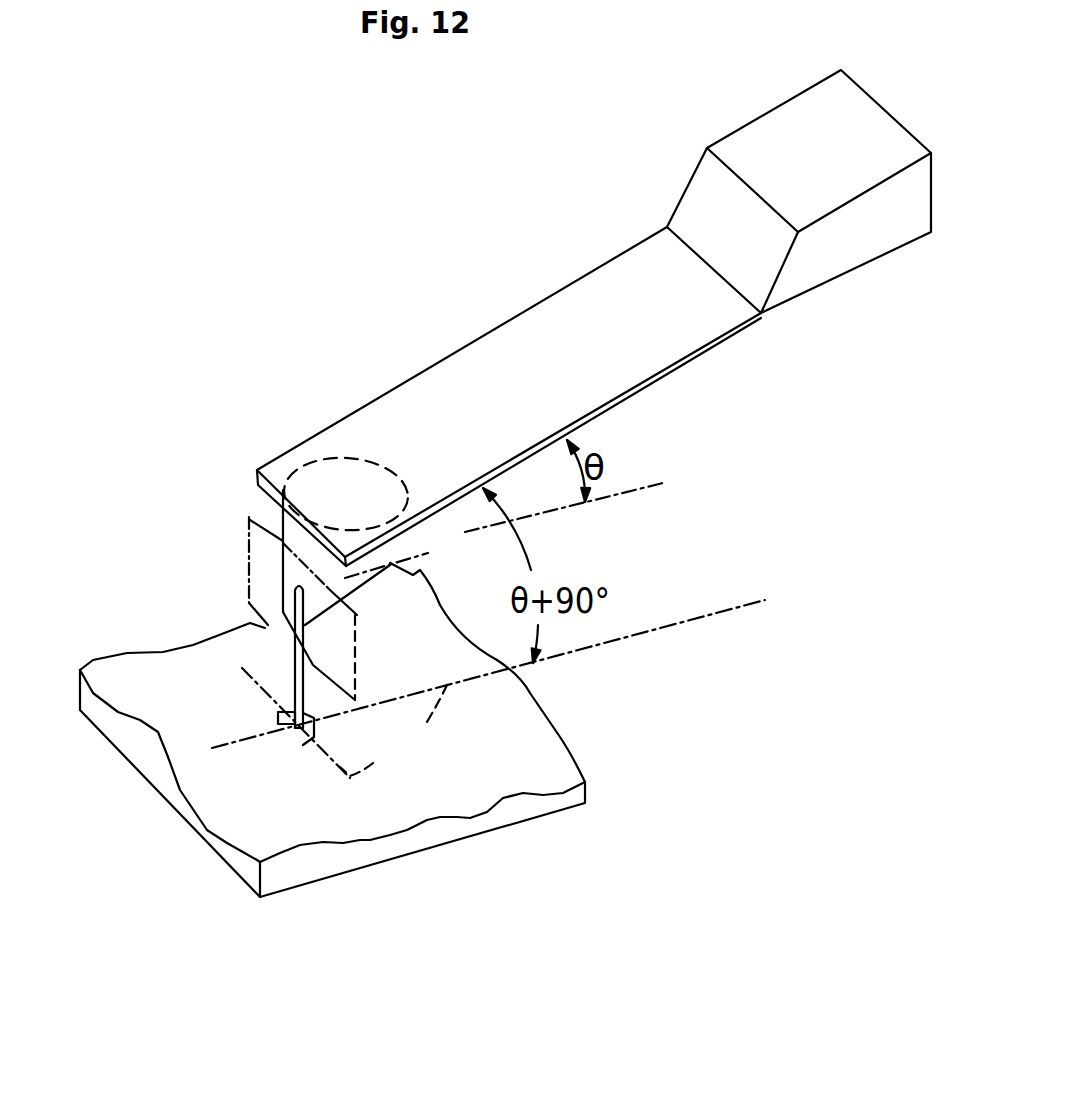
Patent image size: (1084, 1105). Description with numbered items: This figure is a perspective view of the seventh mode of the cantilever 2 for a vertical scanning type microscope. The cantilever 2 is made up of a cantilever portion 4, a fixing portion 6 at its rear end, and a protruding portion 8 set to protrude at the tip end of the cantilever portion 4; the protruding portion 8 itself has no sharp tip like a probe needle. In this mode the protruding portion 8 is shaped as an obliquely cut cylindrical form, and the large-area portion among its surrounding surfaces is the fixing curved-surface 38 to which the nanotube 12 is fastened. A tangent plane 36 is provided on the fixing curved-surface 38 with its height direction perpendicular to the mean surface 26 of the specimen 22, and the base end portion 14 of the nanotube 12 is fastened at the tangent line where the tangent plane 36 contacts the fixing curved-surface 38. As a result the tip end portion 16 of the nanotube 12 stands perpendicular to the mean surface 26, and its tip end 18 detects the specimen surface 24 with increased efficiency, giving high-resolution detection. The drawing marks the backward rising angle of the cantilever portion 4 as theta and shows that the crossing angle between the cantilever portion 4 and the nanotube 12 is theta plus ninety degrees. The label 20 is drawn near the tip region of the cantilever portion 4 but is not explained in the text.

The cantilever 2 is at (456, 346).
The cantilever portion 4 is at (640, 368).
The fixing portion 6 is at (818, 202).
The protruding portion 8 is at (488, 615).
The nanotube 12 is at (262, 633).
The base end portion 14 is at (287, 607).
The tip end portion 16 is at (293, 696).
The tip end 18 is at (297, 729).
The arm tip opening 20 is at (552, 253).
The specimen 22 is at (468, 825).
The specimen surface 24 is at (357, 823).
The mean surface 26 is at (393, 730).
The tangent plane 36 is at (250, 520).
The fixing curved-surface 38 is at (315, 600).